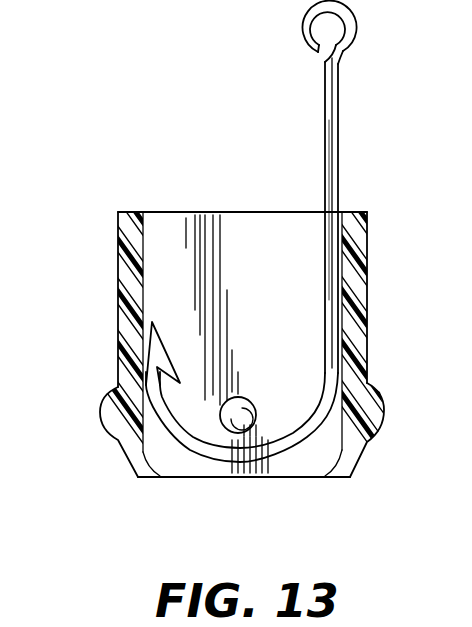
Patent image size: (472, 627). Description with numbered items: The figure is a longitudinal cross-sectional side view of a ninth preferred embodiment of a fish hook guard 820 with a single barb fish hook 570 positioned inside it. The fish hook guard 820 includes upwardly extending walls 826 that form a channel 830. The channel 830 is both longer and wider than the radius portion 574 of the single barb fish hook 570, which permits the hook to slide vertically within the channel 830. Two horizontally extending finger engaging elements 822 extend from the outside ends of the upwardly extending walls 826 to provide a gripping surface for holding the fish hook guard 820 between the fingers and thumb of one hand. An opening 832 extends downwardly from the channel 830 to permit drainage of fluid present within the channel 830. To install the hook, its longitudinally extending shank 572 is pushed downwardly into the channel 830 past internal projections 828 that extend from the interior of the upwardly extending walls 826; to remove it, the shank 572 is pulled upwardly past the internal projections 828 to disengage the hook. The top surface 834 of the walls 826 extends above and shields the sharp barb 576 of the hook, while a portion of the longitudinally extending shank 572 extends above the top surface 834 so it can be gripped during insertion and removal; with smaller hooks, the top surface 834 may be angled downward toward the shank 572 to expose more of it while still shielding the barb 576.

The single barb fish hook 570 is at (375, 128).
The longitudinally extending shank 572 is at (325, 135).
The radius portion 574 is at (200, 455).
The sharp barb 576 is at (150, 324).
The fish hook guard 820 is at (382, 275).
The finger engaging elements 822 is at (112, 413).
The upwardly extending walls 826 is at (412, 323).
The internal projections 828 is at (236, 407).
The channel 830 is at (264, 228).
The opening 832 is at (297, 477).
The top surface 834 is at (130, 212).